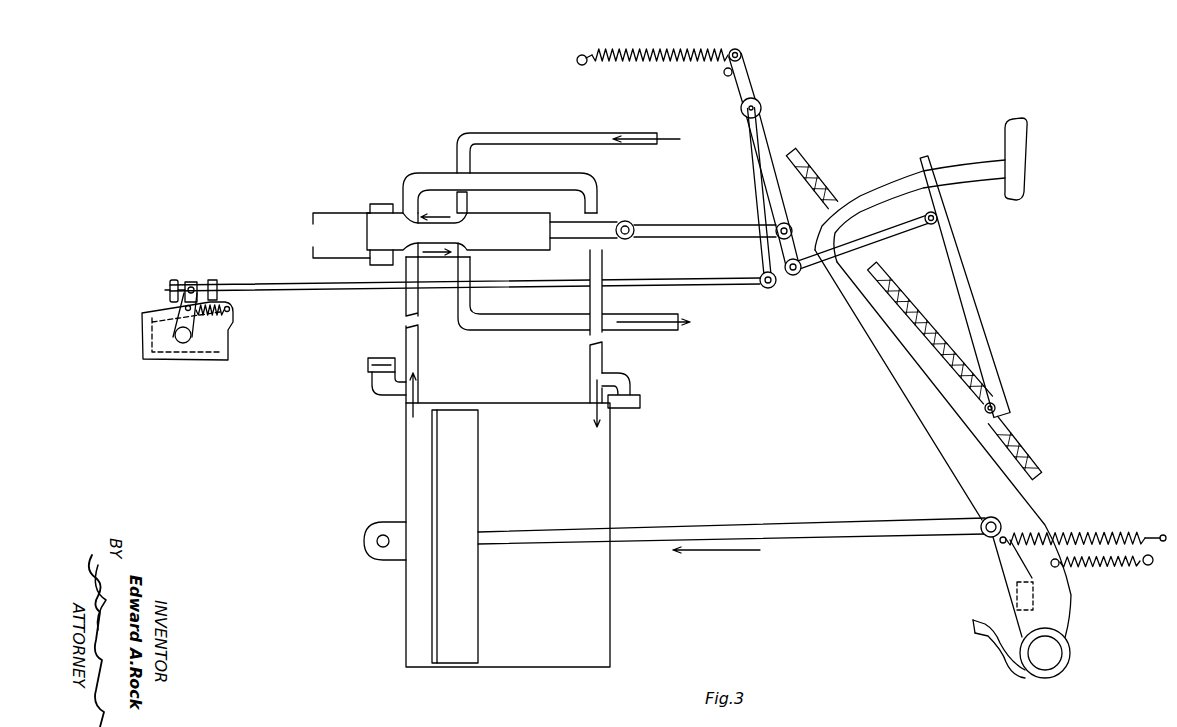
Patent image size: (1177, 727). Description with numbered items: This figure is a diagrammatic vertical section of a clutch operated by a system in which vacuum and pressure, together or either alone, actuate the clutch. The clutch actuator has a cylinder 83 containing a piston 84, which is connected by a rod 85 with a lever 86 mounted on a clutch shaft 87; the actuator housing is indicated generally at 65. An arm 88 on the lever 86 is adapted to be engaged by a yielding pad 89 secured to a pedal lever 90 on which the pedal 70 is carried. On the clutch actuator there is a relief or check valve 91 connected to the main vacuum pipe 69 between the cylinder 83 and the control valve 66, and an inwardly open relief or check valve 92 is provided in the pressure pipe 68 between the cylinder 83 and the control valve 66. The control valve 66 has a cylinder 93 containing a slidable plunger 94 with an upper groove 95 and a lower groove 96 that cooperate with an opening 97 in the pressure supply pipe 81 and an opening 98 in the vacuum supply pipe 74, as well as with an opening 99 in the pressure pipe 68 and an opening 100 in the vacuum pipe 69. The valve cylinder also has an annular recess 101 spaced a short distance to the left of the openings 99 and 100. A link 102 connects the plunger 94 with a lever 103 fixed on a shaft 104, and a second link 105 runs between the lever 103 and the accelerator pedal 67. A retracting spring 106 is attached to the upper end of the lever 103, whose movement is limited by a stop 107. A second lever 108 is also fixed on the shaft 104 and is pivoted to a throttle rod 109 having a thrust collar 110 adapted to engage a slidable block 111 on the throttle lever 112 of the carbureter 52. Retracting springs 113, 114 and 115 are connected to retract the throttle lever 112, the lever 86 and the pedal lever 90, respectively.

The carbureter 52 is at (226, 350).
The cylinder frame 65 is at (610, 484).
The control valve 66 is at (396, 212).
The accelerator pedal 67 is at (955, 250).
The pressure pipe 68 is at (600, 200).
The main vacuum pipe 69 is at (405, 292).
The pedal 70 is at (1029, 158).
The vacuum supply pipe 74 is at (655, 326).
The pressure supply pipe 81 is at (590, 131).
The cylinder 83 is at (574, 654).
The piston 84 is at (458, 655).
The rod 85 is at (892, 531).
The lever 86 is at (1004, 577).
The clutch shaft 87 is at (1055, 655).
The arm 88 is at (993, 641).
The yielding pad 89 is at (1019, 595).
The pedal lever 90 is at (1007, 498).
The relief or check valve 91 is at (377, 378).
The inwardly open relief or check valve 92 is at (631, 398).
The cylinder 93 is at (352, 211).
The slidable plunger 94 is at (381, 222).
The upper groove 95 is at (450, 219).
The lower groove 96 is at (452, 254).
The opening 97 is at (468, 206).
The opening 98 is at (467, 256).
The opening 99 is at (410, 208).
The opening 100 is at (407, 258).
The annular recess 101 is at (371, 262).
The link 102 is at (706, 231).
The lever 103 is at (763, 143).
The shaft 104 is at (758, 105).
The second link 105 is at (901, 228).
The retracting spring 106 is at (697, 51).
The stop 107 is at (727, 74).
The second lever 108 is at (757, 182).
The throttle rod 109 is at (670, 283).
The thrust collar 110 is at (213, 279).
The slidable block 111 is at (191, 280).
The throttle lever 112 is at (177, 322).
The retracting spring 113 is at (229, 309).
The retracting spring 114 is at (1115, 530).
The retracting spring 115 is at (1125, 563).